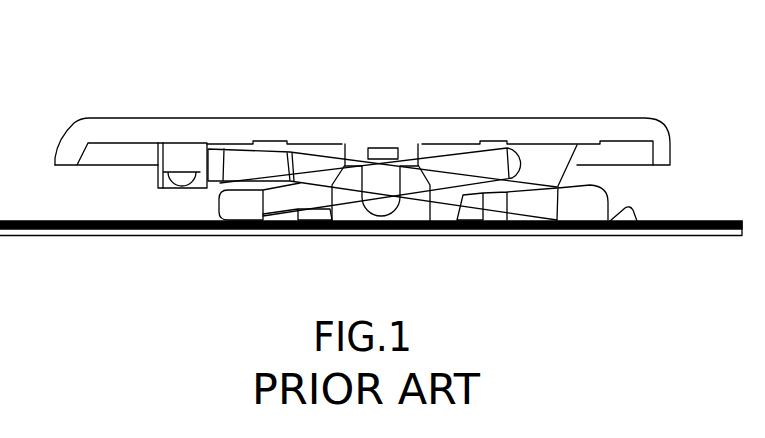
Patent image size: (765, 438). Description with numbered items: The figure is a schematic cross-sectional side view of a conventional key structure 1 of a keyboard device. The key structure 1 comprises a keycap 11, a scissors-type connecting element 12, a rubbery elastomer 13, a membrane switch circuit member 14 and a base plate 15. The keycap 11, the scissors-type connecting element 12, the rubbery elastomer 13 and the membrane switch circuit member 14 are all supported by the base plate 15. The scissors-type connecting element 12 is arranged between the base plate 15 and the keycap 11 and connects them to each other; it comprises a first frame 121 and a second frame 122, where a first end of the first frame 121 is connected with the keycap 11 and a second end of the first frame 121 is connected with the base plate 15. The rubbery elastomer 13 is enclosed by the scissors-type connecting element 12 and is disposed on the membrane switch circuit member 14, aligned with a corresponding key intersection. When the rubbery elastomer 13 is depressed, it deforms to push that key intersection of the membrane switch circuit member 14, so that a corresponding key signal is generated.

The key structure 1 is at (632, 58).
The keycap 11 is at (327, 120).
The scissors-type connecting element 12 is at (173, 158).
The first frame 121 is at (250, 160).
The second frame 122 is at (297, 193).
The rubbery elastomer 13 is at (408, 150).
The membrane switch circuit member 14 is at (610, 229).
The base plate 15 is at (553, 233).